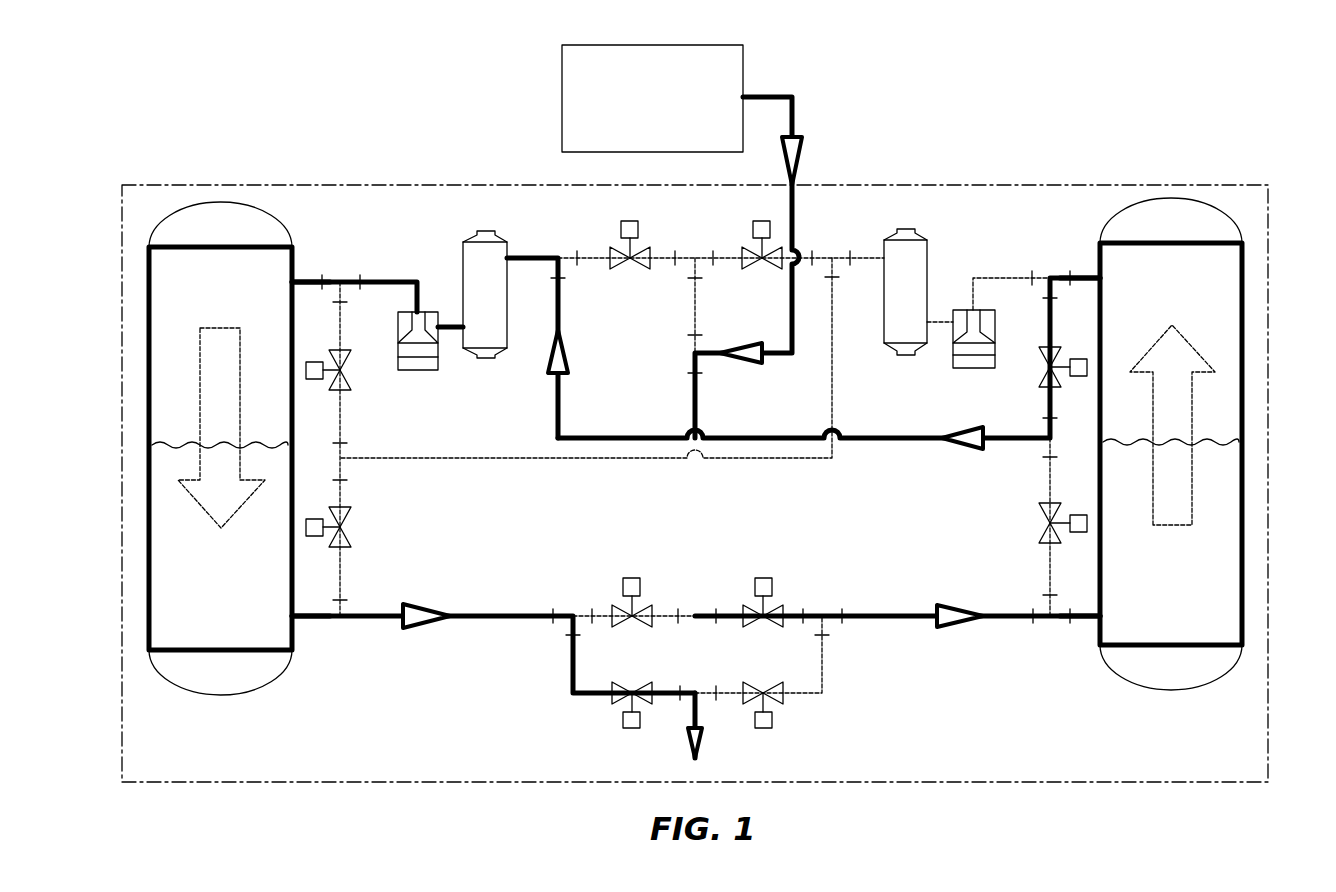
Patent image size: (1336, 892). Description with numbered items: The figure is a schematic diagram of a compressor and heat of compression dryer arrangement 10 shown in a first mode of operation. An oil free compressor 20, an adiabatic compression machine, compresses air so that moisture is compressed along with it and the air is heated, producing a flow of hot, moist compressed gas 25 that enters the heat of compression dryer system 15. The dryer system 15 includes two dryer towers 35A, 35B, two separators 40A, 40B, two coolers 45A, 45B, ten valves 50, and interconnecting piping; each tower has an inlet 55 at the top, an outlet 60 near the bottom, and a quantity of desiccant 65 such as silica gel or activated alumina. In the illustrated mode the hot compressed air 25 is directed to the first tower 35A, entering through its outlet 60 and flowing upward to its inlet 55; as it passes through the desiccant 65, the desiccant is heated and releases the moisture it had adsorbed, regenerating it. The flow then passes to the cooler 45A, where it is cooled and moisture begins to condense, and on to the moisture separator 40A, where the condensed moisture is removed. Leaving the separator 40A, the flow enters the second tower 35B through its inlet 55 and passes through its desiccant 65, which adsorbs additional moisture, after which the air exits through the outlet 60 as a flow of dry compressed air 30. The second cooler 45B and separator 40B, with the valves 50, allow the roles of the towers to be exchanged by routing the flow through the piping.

The gas drying system 10 is at (903, 42).
The heat of compression dryer system 15 is at (1113, 160).
The oil free compressor 20 is at (562, 85).
The flow of compressed gas 25 is at (797, 226).
The flow of dry compressed air 30 is at (690, 718).
The first dryer tower 35A is at (1244, 315).
The second dryer tower 35B is at (147, 318).
The moisture separator 40A is at (422, 372).
The separator 40B is at (965, 370).
The cooler 45A is at (462, 262).
The cooler 45B is at (930, 258).
The valve 50 is at (621, 230).
The inlet 55 is at (294, 280).
The outlet 60 is at (296, 620).
The desiccant 65 is at (173, 557).